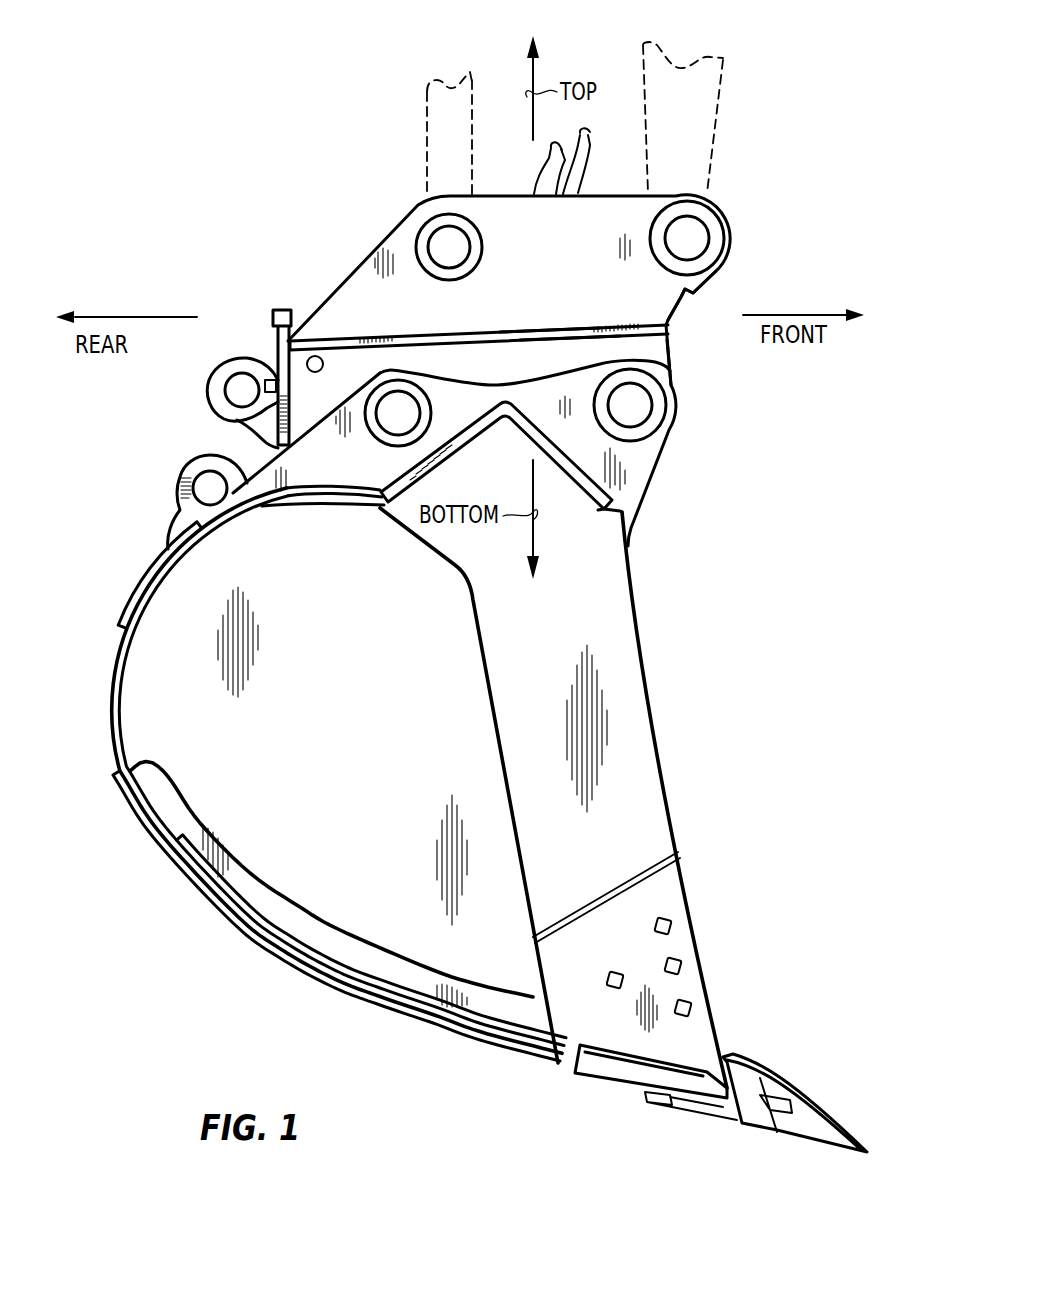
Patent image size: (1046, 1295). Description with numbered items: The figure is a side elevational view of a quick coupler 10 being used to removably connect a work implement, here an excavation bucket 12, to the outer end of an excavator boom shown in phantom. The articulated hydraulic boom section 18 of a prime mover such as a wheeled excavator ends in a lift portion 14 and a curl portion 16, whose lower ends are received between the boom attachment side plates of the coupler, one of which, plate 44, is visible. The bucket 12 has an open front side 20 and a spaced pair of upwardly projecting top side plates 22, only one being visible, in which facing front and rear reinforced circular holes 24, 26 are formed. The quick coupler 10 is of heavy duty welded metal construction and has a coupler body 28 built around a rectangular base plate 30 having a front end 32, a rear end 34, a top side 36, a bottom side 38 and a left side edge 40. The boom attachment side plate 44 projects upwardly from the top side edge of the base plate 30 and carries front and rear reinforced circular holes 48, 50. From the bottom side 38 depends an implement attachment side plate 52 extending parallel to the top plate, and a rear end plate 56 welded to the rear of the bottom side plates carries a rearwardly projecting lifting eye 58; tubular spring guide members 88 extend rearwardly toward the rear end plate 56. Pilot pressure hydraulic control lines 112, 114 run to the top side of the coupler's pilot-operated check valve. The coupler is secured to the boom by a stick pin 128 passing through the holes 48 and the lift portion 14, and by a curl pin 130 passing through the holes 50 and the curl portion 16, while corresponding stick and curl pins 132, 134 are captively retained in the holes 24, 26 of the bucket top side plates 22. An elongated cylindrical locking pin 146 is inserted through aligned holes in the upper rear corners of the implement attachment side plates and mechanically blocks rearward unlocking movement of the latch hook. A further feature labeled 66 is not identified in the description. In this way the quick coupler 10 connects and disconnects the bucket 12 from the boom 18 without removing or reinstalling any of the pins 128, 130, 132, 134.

The quick coupler 10 is at (534, 259).
The excavation bucket 12 is at (343, 718).
The lift portion 14 is at (717, 147).
The curl portion 16 is at (425, 120).
The articulated hydraulic boom section 18 is at (743, 114).
The open front side 20 is at (668, 790).
The top side plates 22 is at (478, 397).
The front reinforced circular hole 24 is at (658, 436).
The rear reinforced circular hole 26 is at (392, 432).
The coupler body 28 is at (708, 435).
The rectangular base plate 30 is at (545, 318).
The front end 32 is at (697, 293).
The rear end 34 is at (273, 325).
The top side 36 is at (625, 324).
The bottom side 38 is at (590, 340).
The left side edge 40 is at (479, 324).
The boom attachment side plate 44 is at (590, 248).
The front reinforced circular hole 48 is at (721, 228).
The rear reinforced circular hole 50 is at (429, 229).
The implement attachment side plate 52 is at (490, 372).
The rear end plate 56 is at (243, 424).
The lifting eye 58 is at (216, 371).
The front edge of bracket 66 is at (678, 368).
The spring guide members 88 is at (210, 385).
The pilot pressure hydraulic control line 112 is at (543, 158).
The pilot pressure hydraulic control line 114 is at (580, 167).
The stick pin 128 is at (683, 233).
The curl pin 130 is at (437, 247).
The stick pin 132 is at (635, 412).
The curl pin 134 is at (417, 436).
The locking pin 146 is at (317, 356).